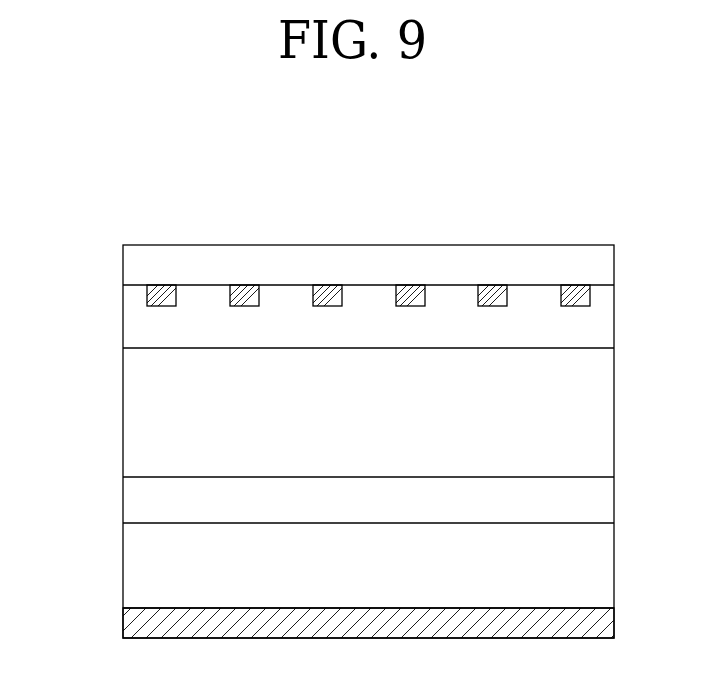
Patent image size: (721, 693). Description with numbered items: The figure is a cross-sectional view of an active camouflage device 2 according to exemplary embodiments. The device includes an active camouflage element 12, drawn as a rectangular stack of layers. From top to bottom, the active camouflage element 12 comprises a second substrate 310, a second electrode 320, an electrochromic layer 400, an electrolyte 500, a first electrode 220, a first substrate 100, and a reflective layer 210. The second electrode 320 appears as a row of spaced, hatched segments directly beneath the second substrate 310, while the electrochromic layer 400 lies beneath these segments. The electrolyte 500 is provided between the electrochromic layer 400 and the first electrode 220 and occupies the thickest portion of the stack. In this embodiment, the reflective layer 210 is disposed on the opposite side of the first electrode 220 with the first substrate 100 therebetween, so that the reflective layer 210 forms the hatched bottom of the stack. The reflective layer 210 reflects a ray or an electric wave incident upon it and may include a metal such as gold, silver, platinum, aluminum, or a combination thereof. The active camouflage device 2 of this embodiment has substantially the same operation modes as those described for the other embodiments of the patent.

The active camouflage device 2 is at (581, 130).
The active camouflage element 12 is at (458, 231).
The second substrate 310 is at (135, 267).
The second electrode 320 is at (148, 296).
The electrochromic layer 400 is at (135, 328).
The electrolyte 500 is at (135, 418).
The first electrode 220 is at (135, 500).
The first substrate 100 is at (135, 565).
The reflective layer 210 is at (135, 623).